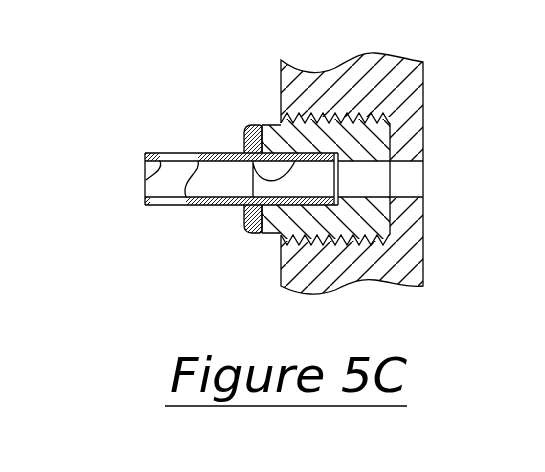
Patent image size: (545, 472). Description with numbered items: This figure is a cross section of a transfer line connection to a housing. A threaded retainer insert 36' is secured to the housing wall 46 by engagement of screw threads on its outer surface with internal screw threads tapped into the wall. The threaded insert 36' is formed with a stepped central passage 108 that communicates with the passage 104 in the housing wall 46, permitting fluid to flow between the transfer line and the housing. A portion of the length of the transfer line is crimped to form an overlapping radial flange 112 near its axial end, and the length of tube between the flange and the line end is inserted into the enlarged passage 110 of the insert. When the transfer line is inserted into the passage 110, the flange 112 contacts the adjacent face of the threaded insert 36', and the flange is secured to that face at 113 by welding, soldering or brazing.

The threaded retainer insert 36' is at (429, 97).
The housing wall 46 is at (386, 292).
The passage 104 is at (412, 163).
The stepped central passage 108 is at (363, 197).
The enlarged passage 110 is at (253, 162).
The radial flange 112 is at (258, 236).
The securing location 113 is at (247, 216).